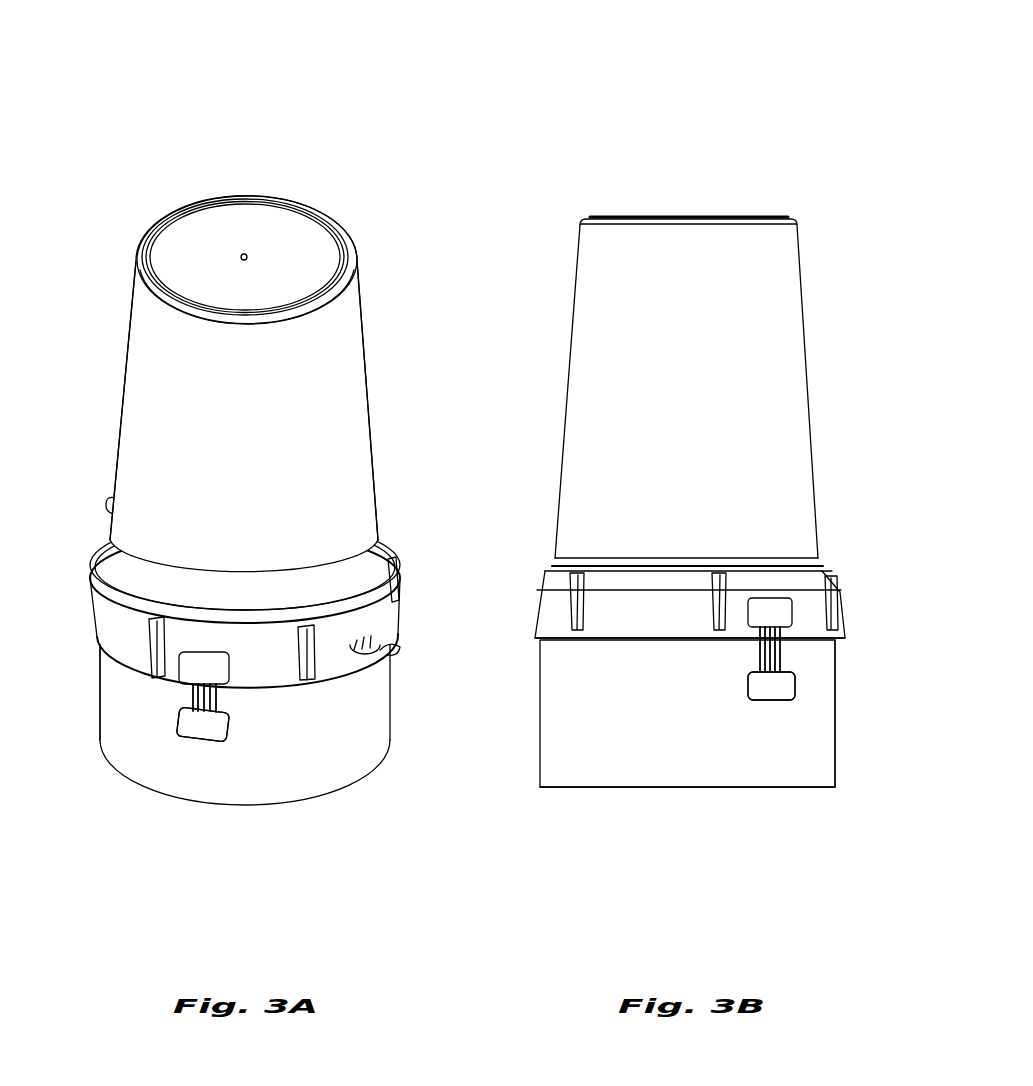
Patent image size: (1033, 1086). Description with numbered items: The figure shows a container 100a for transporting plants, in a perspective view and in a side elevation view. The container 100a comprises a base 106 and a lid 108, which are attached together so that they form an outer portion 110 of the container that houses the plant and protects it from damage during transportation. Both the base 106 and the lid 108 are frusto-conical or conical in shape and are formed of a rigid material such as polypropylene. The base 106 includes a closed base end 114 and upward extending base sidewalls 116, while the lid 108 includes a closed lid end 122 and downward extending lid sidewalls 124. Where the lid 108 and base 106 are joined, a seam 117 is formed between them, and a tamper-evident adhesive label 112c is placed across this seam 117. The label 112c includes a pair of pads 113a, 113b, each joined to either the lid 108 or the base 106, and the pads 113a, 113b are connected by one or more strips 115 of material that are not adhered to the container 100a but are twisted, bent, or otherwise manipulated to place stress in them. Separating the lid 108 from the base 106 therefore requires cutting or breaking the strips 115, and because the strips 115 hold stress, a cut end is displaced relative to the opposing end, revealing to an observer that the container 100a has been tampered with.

In FIG. 3A, the container 100a is at (175, 153).
In FIG. 3B, the container 100a is at (612, 147).
In FIG. 3A, the base 106 is at (392, 692).
In FIG. 3B, the base 106 is at (540, 685).
In FIG. 3A, the lid 108 is at (360, 328).
In FIG. 3B, the lid 108 is at (565, 420).
In FIG. 3A, the outer portion 110 is at (120, 388).
In FIG. 3B, the outer portion 110 is at (812, 450).
In FIG. 3A, the tamper-evident adhesive label 112c is at (190, 728).
In FIG. 3B, the tamper-evident adhesive label 112c is at (785, 688).
In FIG. 3A, the pad 113a is at (185, 674).
In FIG. 3B, the pad 113a is at (782, 608).
In FIG. 3A, the pad 113b is at (215, 735).
In FIG. 3B, the pad 113b is at (763, 693).
In FIG. 3B, the closed base end 114 is at (626, 787).
In FIG. 3A, the strips 115 is at (185, 698).
In FIG. 3B, the strips 115 is at (785, 653).
In FIG. 3B, the base sidewalls 116 is at (837, 697).
In FIG. 3A, the seam 117 is at (300, 686).
In FIG. 3B, the seam 117 is at (608, 640).
In FIG. 3A, the closed lid end 122 is at (298, 225).
In FIG. 3B, the closed lid end 122 is at (735, 215).
In FIG. 3B, the lid sidewalls 124 is at (803, 295).